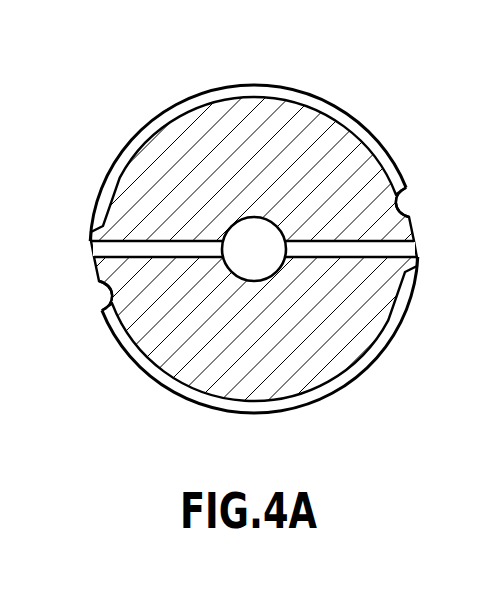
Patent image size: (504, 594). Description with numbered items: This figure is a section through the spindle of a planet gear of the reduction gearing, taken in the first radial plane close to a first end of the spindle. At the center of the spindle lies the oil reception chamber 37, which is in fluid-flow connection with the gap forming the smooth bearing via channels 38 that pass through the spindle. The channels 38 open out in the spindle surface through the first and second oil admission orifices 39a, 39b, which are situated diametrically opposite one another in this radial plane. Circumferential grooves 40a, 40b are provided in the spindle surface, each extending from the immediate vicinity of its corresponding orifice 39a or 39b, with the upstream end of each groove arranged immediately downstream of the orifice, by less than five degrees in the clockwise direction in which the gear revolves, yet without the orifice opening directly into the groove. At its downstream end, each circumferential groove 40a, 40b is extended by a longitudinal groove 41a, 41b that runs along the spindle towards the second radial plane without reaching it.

The oil reception chamber 37 is at (266, 258).
The channels 38 is at (157, 243).
The first oil admission orifice 39a is at (92, 248).
The second oil admission orifice 39b is at (418, 248).
The circumferential groove 40a is at (212, 98).
The circumferential groove 40b is at (298, 398).
The longitudinal groove 41a is at (404, 203).
The longitudinal groove 41b is at (100, 289).